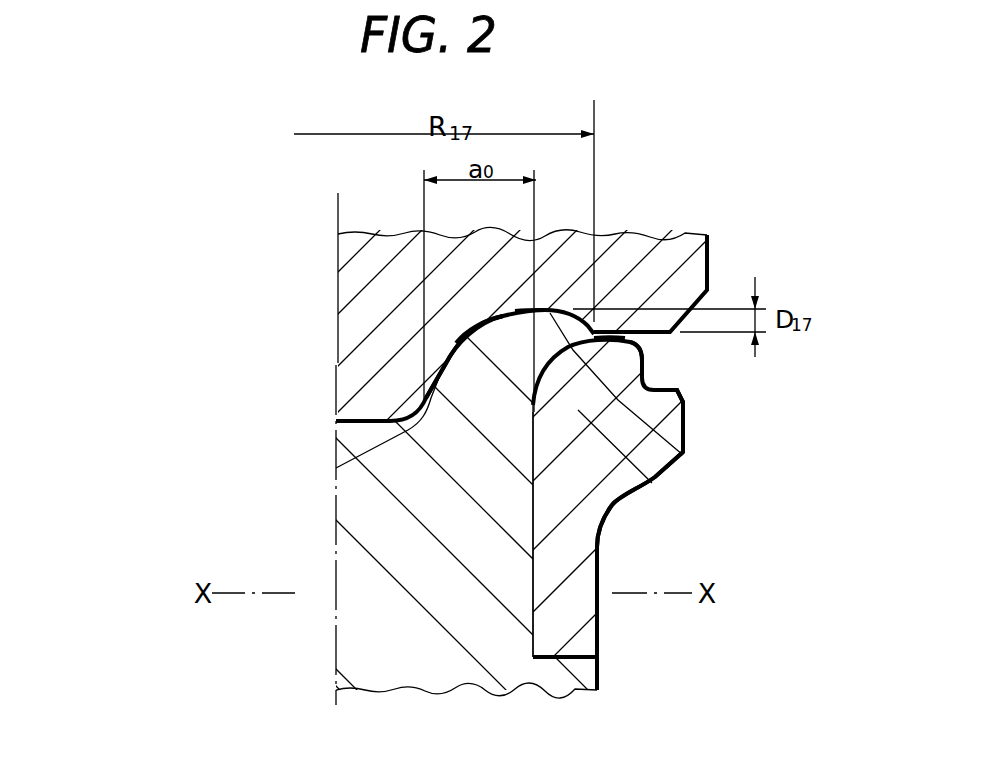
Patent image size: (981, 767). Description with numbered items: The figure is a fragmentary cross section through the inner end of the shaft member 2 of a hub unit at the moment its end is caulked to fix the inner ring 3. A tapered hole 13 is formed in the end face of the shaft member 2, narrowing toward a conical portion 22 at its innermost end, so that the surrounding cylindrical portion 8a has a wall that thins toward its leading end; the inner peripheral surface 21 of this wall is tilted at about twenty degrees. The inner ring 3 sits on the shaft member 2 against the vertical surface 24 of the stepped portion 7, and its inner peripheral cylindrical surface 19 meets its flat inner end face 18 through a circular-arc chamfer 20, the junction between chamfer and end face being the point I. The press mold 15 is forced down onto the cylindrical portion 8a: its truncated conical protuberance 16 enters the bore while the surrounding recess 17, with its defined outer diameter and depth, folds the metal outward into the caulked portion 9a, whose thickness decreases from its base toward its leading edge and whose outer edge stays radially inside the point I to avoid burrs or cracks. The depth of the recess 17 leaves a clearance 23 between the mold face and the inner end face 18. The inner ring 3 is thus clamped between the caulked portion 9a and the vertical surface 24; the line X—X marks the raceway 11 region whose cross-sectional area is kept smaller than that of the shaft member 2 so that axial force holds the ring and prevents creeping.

The shaft member 2 is at (352, 656).
The inner ring 3 is at (643, 567).
The stepped portion 7 is at (537, 573).
The cylindrical portion 8a is at (537, 441).
The caulked portion 9a is at (533, 347).
The raceway 11 is at (605, 505).
The tapered hole 13 is at (470, 342).
The press mold 15 is at (571, 262).
The truncated conical protuberance 16 is at (352, 391).
The recess 17 is at (492, 335).
The inner end face 18 is at (620, 335).
The inner peripheral cylindrical surface 19 is at (530, 513).
The chamfer 20 is at (537, 427).
The inner peripheral surface 21 is at (440, 355).
The conical portion 22 is at (352, 445).
The clearance 23 is at (602, 337).
The vertical surface 24 is at (577, 651).
The point of junction I is at (618, 348).